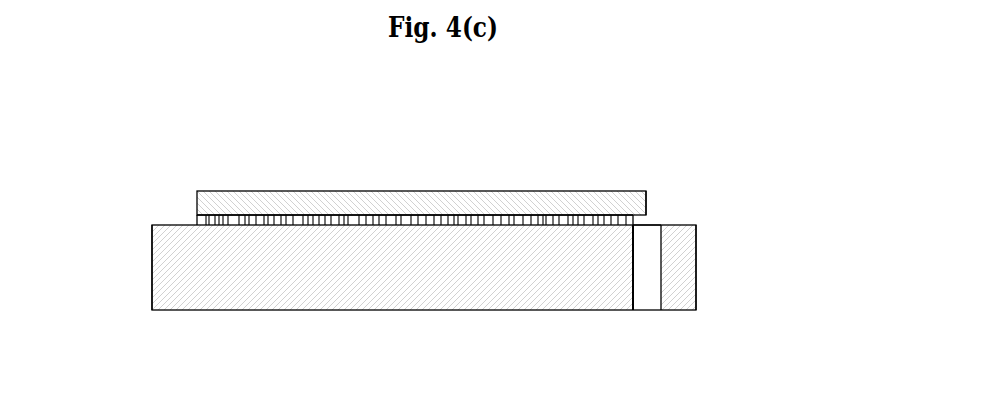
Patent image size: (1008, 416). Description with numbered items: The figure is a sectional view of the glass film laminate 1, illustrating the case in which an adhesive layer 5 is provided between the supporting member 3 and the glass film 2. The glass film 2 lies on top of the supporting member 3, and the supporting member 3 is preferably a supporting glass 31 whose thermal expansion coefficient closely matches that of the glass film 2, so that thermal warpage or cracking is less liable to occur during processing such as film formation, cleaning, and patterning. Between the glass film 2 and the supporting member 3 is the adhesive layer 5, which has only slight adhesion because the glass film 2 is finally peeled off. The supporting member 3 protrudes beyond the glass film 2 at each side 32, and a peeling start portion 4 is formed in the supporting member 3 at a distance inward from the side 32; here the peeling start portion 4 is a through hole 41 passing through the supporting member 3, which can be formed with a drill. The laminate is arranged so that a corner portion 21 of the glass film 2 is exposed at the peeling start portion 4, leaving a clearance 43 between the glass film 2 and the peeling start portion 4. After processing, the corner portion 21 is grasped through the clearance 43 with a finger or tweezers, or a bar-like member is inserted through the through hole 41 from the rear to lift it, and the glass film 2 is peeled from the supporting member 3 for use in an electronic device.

The glass film laminate 1 is at (431, 247).
The glass film 2 is at (342, 200).
The corner portion 21 is at (641, 200).
The adhesive layer 5 is at (497, 213).
The supporting member 3 is at (424, 312).
The supporting glass 31 is at (370, 292).
The side 32 is at (152, 264).
The peeling start portion 4 is at (719, 304).
The through hole 41 is at (642, 293).
The clearance 43 is at (648, 229).